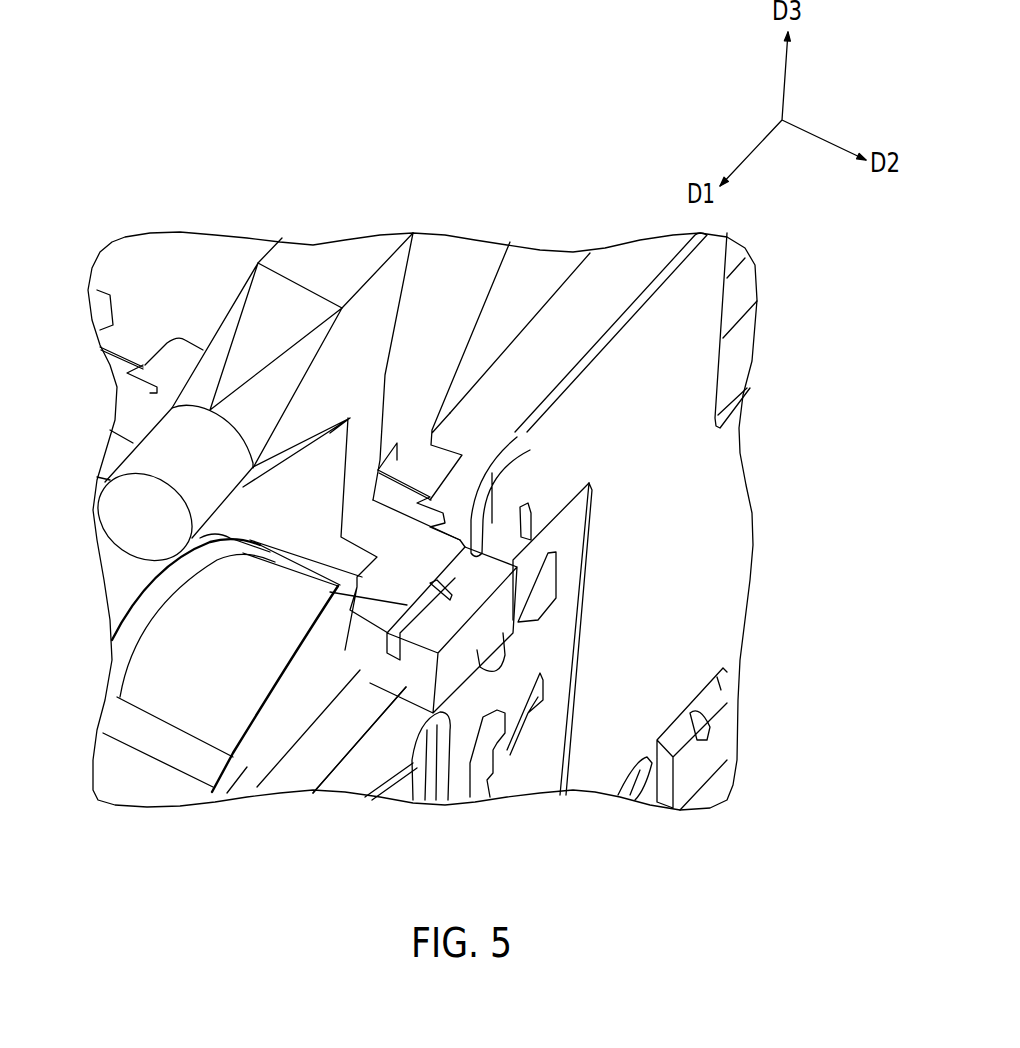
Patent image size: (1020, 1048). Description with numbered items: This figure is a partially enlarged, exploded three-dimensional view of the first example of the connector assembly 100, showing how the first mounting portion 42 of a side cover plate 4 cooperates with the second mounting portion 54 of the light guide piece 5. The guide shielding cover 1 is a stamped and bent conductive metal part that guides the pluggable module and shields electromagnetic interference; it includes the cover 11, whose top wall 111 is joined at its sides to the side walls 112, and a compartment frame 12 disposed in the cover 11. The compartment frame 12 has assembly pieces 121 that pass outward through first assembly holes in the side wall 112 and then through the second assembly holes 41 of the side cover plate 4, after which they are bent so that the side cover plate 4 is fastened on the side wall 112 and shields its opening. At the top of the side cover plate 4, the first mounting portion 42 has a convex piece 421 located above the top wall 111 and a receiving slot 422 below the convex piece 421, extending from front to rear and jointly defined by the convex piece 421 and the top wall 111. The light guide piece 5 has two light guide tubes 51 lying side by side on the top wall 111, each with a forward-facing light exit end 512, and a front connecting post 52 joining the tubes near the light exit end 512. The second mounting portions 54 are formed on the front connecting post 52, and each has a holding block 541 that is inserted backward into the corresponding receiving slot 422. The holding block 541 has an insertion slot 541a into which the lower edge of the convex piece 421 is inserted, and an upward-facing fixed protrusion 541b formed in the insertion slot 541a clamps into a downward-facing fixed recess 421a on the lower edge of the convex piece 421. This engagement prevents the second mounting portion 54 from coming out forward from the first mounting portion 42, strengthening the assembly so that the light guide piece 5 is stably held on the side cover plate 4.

The connector assembly 100 is at (508, 174).
The guide shielding cover 1 is at (320, 763).
The cover 11 is at (277, 767).
The top wall 111 is at (242, 770).
The side wall 112 is at (531, 768).
The compartment frame 12 is at (736, 739).
The assembly piece 121 is at (718, 747).
The side cover plate 4 is at (720, 598).
The second assembly hole 41 is at (690, 717).
The first mounting portion 42 is at (513, 433).
The convex piece 421 is at (492, 520).
The fixed recess 421a is at (521, 507).
The receiving slot 422 is at (525, 523).
The light guide piece 5 is at (260, 262).
The light guide tube 51 is at (313, 263).
The front connecting post 52 is at (133, 412).
The light exit end 512 is at (125, 515).
The second mounting portion 54 is at (388, 676).
The holding block 541 is at (358, 672).
The insertion slot 541a is at (340, 597).
The fixed protrusion 541b is at (437, 580).